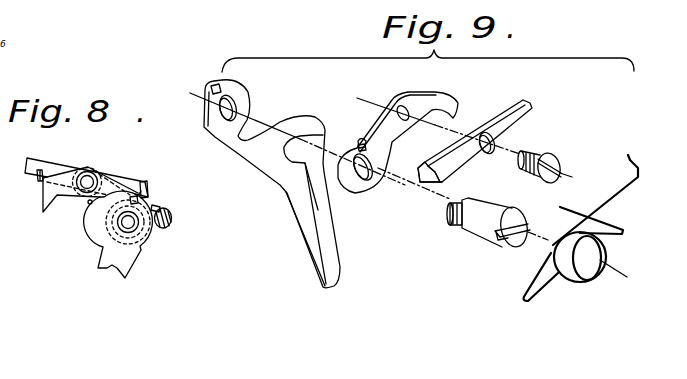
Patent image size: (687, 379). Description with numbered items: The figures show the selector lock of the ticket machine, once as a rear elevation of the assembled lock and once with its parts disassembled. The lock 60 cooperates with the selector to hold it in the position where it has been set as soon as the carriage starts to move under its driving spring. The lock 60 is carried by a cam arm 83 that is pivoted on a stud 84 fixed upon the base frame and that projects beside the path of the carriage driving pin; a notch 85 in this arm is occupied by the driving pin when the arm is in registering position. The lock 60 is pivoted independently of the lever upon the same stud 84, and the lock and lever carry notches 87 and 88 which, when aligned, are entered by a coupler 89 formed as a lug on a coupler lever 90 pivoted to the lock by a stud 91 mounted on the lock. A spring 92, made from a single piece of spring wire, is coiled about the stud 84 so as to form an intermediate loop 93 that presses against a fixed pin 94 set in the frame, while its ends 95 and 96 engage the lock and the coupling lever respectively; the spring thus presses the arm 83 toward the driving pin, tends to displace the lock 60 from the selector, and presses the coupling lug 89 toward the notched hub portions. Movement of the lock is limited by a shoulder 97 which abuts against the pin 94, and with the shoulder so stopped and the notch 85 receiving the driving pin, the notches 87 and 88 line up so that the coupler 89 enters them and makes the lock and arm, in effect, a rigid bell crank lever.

In FIG. 8, the lock 60 is at (47, 193).
In FIG. 9, the lock 60 is at (440, 100).
In FIG. 9, the cam arm 83 is at (293, 200).
In FIG. 8, the stud 84 is at (130, 222).
In FIG. 9, the stud 84 is at (480, 235).
In FIG. 9, the notch 85 is at (324, 195).
In FIG. 9, the notch 87 is at (358, 142).
In FIG. 8, the notch 88 is at (147, 191).
In FIG. 9, the notch 88 is at (212, 87).
In FIG. 8, the coupler 89 is at (145, 181).
In FIG. 9, the coupler 89 is at (431, 158).
In FIG. 8, the coupler lever 90 is at (53, 167).
In FIG. 9, the coupler lever 90 is at (507, 118).
In FIG. 8, the stud 91 is at (95, 190).
In FIG. 9, the stud 91 is at (548, 152).
In FIG. 9, the spring 92 is at (607, 250).
In FIG. 9, the intermediate loop 93 is at (517, 293).
In FIG. 8, the fixed pin 94 is at (171, 222).
In FIG. 9, the spring end 95 is at (610, 217).
In FIG. 9, the spring end 96 is at (637, 158).
In FIG. 8, the shoulder 97 is at (161, 208).
In FIG. 9, the shoulder 97 is at (358, 147).